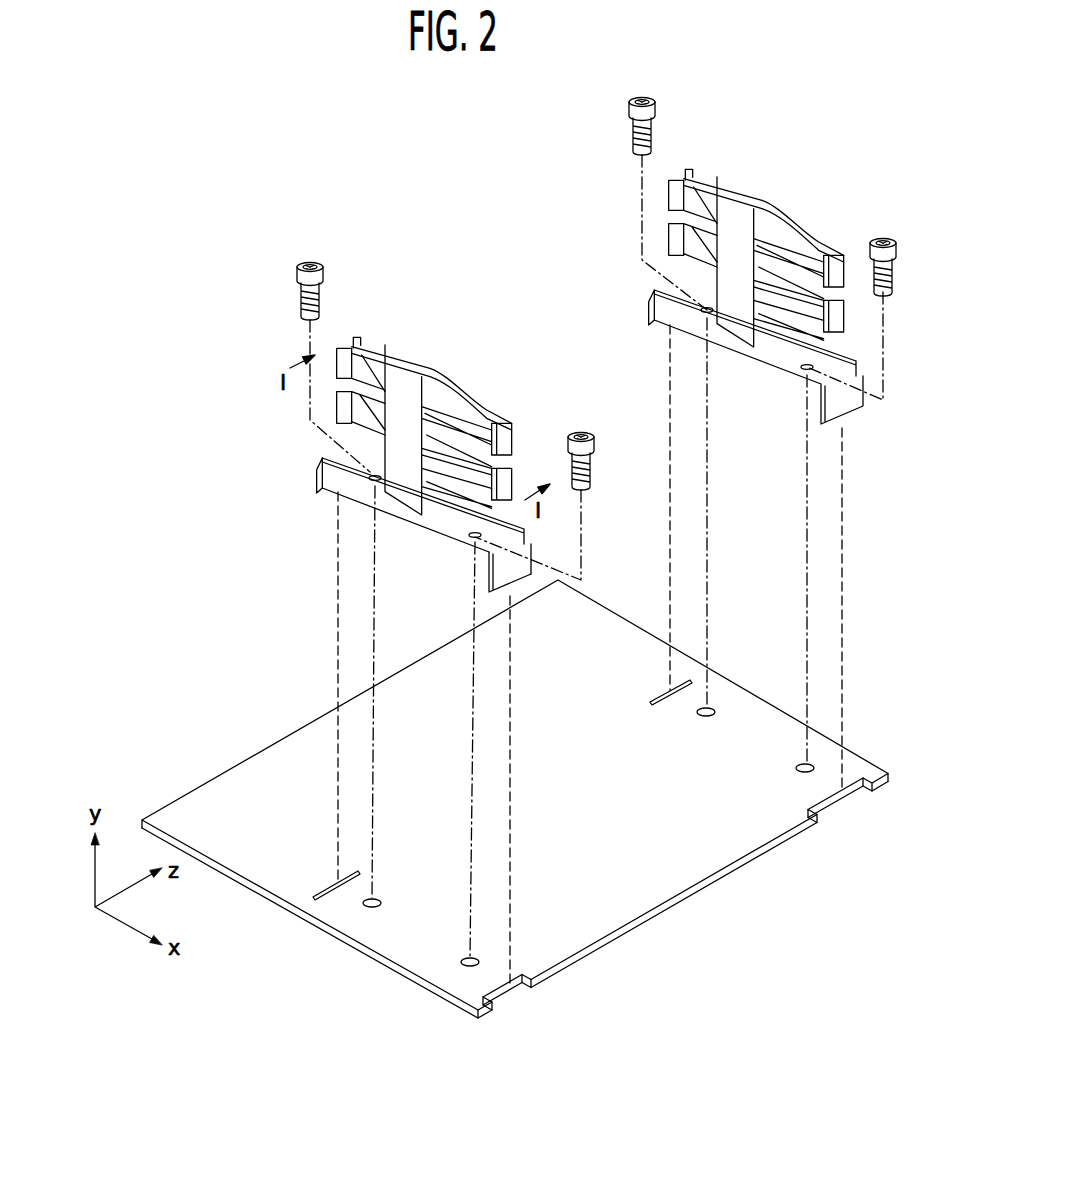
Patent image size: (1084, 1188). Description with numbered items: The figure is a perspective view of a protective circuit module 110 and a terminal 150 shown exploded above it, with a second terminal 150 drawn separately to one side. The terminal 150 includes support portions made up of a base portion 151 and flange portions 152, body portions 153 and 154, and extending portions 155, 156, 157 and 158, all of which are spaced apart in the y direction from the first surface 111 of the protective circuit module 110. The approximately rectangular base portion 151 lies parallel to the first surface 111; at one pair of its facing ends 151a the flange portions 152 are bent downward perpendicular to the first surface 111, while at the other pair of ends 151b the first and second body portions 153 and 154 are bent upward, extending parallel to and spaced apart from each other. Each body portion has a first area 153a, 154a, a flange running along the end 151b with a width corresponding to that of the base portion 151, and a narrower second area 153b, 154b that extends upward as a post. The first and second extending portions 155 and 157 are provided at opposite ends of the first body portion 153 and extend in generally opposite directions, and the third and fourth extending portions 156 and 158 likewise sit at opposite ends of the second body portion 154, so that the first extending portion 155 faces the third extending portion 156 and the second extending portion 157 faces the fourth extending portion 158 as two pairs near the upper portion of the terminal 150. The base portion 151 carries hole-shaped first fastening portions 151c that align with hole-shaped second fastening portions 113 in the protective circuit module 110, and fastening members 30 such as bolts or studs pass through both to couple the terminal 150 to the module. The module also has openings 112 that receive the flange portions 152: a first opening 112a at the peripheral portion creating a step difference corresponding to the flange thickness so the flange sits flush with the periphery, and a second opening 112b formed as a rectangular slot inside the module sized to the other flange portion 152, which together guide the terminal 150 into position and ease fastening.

The fastening member 30 is at (310, 262).
The protective circuit module 110 is at (503, 799).
The first surface 111 is at (250, 762).
The openings 112 is at (563, 823).
The first opening 112a is at (487, 962).
The second opening 112b is at (343, 878).
The second fastening portions 113 is at (375, 905).
The terminal 150 is at (545, 363).
The base portion 151 is at (442, 527).
The ends of the base portion 151a is at (429, 527).
The other ends of the base portion 151b is at (466, 556).
The first fastening portions 151c is at (376, 538).
The flange portions 152 is at (529, 601).
The first body portion 153 is at (309, 471).
The first area of the first body portion 153a is at (314, 509).
The second area of the first body portion 153b is at (332, 459).
The second body portion 154 is at (522, 405).
The first area of the second body portion 154a is at (535, 428).
The second area of the second body portion 154b is at (516, 396).
The first extending portion 155 is at (447, 495).
The third extending portion 156 is at (492, 450).
The second extending portion 157 is at (367, 357).
The fourth extending portion 158 is at (432, 360).